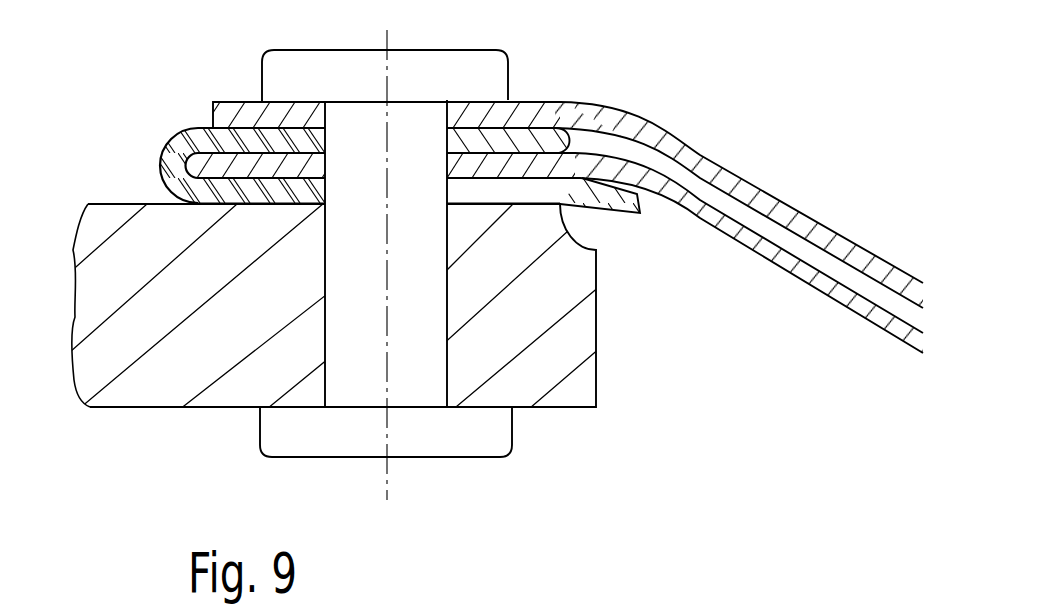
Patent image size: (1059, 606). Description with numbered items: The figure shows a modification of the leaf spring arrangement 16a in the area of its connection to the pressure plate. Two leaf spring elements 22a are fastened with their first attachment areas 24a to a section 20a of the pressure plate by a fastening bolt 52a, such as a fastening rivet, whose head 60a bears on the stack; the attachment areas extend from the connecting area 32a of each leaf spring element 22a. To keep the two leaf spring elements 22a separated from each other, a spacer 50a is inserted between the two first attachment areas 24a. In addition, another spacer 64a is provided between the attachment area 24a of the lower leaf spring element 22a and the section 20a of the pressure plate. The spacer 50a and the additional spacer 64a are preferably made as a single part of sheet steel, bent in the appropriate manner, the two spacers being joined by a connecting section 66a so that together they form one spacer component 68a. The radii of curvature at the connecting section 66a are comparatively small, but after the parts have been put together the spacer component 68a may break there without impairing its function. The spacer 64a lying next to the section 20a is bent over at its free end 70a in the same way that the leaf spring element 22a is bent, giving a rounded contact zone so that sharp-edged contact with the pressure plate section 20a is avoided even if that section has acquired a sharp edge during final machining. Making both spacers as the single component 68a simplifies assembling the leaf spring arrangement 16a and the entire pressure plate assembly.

The leaf spring arrangement 16a is at (618, 83).
The section of a pressure plate 20a is at (175, 366).
The leaf spring element 22a is at (852, 228).
The first attachment area 24a is at (286, 110).
The connecting area 32a is at (739, 176).
The spacer 50a is at (204, 141).
The fastening bolt 52a is at (409, 118).
The head of the bolt 60a is at (488, 78).
The additional spacer 64a is at (204, 192).
The connecting section 66a is at (186, 164).
The spacer component 68a is at (145, 131).
The free end 70a is at (606, 190).